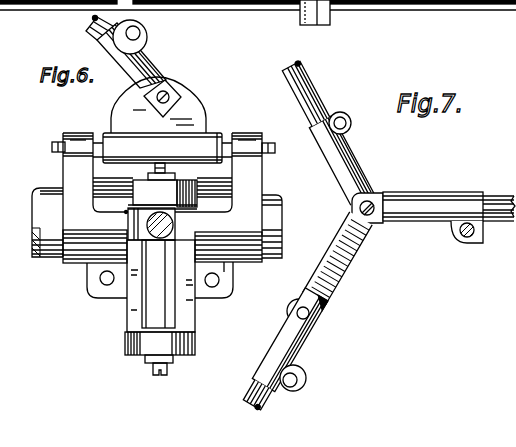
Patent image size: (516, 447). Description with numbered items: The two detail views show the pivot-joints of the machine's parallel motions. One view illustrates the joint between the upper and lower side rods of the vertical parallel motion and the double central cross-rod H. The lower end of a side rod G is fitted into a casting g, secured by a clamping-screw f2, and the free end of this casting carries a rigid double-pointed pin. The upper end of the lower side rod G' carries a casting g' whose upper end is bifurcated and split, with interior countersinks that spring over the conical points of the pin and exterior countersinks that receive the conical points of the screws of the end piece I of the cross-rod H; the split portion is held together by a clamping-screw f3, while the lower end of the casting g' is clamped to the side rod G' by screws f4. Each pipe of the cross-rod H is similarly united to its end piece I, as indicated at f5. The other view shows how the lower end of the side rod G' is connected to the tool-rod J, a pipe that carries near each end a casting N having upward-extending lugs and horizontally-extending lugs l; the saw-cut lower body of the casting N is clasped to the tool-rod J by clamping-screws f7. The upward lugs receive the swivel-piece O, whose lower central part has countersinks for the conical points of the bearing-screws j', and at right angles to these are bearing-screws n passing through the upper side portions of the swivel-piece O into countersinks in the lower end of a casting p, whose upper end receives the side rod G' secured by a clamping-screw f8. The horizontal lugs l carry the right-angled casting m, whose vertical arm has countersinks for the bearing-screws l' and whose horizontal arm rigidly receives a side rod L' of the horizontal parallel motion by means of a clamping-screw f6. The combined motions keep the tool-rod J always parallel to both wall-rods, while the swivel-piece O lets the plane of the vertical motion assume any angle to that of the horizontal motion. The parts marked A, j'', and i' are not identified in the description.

In FIG. 6, the side rod G' is at (93, 35).
In FIG. 7, the side rod G' is at (242, 395).
In FIG. 6, the casting p is at (150, 63).
In FIG. 6, the clamping-screw f8 is at (140, 34).
In FIG. 6, the swivel-piece O is at (158, 105).
In FIG. 6, the bearing-screw n is at (171, 85).
In FIG. 6, the casting N is at (162, 195).
In FIG. 6, the pin j'' is at (161, 133).
In FIG. 6, the bearing-screw j' is at (160, 162).
In FIG. 6, the bearing-screw l' is at (155, 274).
In FIG. 6, the horizontally-extending lug l is at (159, 274).
In FIG. 6, the side rod L' is at (164, 230).
In FIG. 6, the clamping-screw f6 is at (125, 213).
In FIG. 6, the tool-rod J is at (50, 258).
In FIG. 6, the clamping-screw f7 is at (231, 296).
In FIG. 6, the right-angled casting m is at (158, 284).
In FIG. 7, the frame A is at (333, 17).
In FIG. 7, the casting g is at (345, 160).
In FIG. 7, the side rod G is at (306, 93).
In FIG. 7, the clamping-screw f2 is at (348, 121).
In FIG. 7, the screw i' is at (369, 221).
In FIG. 7, the end piece I is at (414, 226).
In FIG. 7, the clamping-screw f5 is at (458, 241).
In FIG. 7, the double central cross-rod H is at (497, 222).
In FIG. 7, the casting g' is at (312, 302).
In FIG. 7, the clamping-screw f3 is at (296, 306).
In FIG. 7, the clamping-screw f4 is at (302, 383).